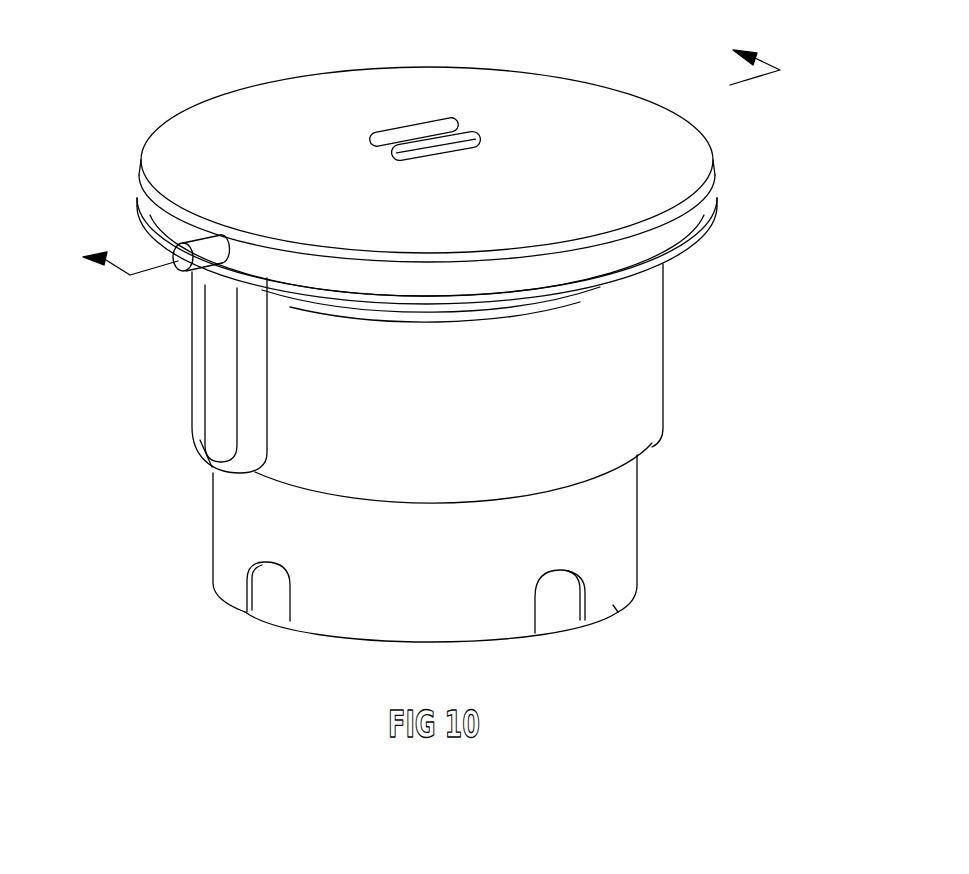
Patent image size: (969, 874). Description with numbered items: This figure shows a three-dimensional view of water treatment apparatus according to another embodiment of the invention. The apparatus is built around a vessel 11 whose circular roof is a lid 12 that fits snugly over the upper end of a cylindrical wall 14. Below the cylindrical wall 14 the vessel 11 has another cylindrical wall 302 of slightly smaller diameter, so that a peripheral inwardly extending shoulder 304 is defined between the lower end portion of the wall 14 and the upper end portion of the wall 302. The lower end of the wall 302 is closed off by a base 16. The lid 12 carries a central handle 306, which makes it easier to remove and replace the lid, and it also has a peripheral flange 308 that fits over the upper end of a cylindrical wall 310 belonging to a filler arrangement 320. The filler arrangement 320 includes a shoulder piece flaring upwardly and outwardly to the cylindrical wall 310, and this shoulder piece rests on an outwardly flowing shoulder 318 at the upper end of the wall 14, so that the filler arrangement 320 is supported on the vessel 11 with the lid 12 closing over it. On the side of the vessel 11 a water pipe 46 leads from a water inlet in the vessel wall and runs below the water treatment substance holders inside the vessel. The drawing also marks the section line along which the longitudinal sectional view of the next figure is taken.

The vessel 11 is at (703, 407).
The lid 12 is at (545, 102).
The cylindrical wall 14 is at (637, 333).
The base 16 is at (617, 603).
The water pipe 46 is at (213, 365).
The cylindrical wall 302 is at (613, 540).
The shoulder 304 is at (647, 445).
The handle 306 is at (432, 135).
The peripheral flange 308 is at (710, 165).
The cylindrical wall 310 is at (675, 228).
The shoulder 318 is at (387, 317).
The filler arrangement 320 is at (749, 179).